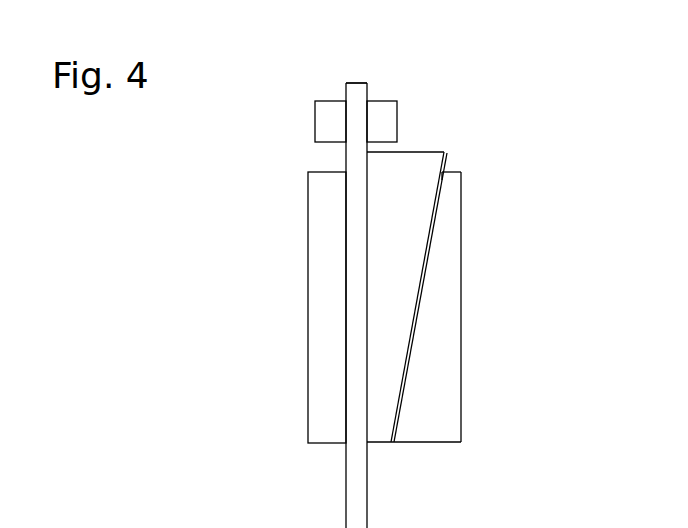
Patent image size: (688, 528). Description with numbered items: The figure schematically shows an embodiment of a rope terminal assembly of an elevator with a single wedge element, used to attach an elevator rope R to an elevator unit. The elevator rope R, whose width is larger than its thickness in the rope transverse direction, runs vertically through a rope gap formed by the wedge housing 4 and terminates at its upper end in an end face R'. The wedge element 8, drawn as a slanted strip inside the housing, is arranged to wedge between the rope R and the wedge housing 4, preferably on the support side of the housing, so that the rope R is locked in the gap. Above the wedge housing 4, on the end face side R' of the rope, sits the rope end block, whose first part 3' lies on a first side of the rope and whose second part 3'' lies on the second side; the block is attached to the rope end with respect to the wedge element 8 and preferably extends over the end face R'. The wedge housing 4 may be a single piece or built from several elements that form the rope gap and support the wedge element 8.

The elevator rope R is at (302, 305).
The end face of the elevator rope R' is at (412, 64).
The first part of the rope end block 3' is at (284, 130).
The second part of the rope end block 3'' is at (439, 118).
The wedge housing 4 is at (325, 300).
The wedge element 8 is at (423, 188).